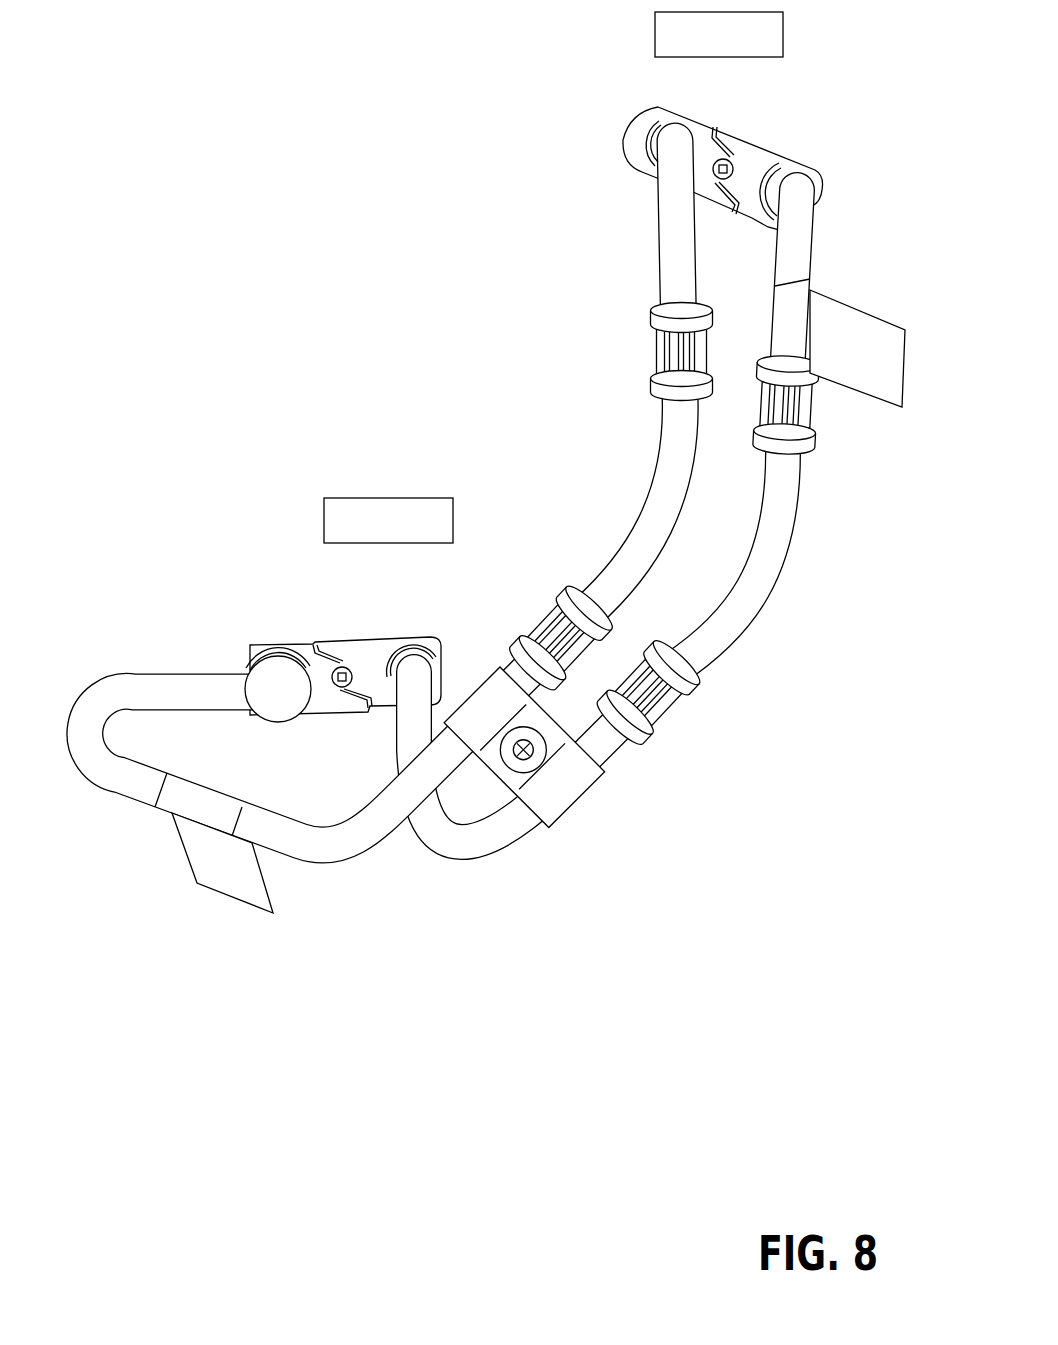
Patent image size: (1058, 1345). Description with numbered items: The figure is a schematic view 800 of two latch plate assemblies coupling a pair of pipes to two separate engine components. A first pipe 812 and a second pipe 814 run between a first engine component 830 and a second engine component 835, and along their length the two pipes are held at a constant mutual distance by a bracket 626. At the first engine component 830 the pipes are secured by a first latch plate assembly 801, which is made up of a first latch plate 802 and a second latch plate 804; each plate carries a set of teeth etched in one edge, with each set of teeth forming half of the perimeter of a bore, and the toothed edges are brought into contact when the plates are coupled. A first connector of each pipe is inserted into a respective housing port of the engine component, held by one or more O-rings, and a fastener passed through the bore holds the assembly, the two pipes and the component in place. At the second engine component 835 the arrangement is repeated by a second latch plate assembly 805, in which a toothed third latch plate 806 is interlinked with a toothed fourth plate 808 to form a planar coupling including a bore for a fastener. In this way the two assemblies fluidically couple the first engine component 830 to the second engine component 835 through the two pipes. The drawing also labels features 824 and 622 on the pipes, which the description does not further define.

The schematic view 800 is at (815, 57).
The first latch plate assembly 801 is at (350, 733).
The first latch plate 802 is at (303, 650).
The second latch plate 804 is at (386, 650).
The second latch plate assembly 805 is at (633, 189).
The third latch plate 806 is at (658, 106).
The fourth plate 808 is at (763, 160).
The first pipe 812 is at (377, 843).
The second pipe 814 is at (462, 860).
The coupling 824 is at (657, 340).
The bracket 626 is at (582, 800).
The identification tag 622 is at (856, 372).
The first engine component 830 is at (336, 625).
The second engine component 835 is at (757, 128).